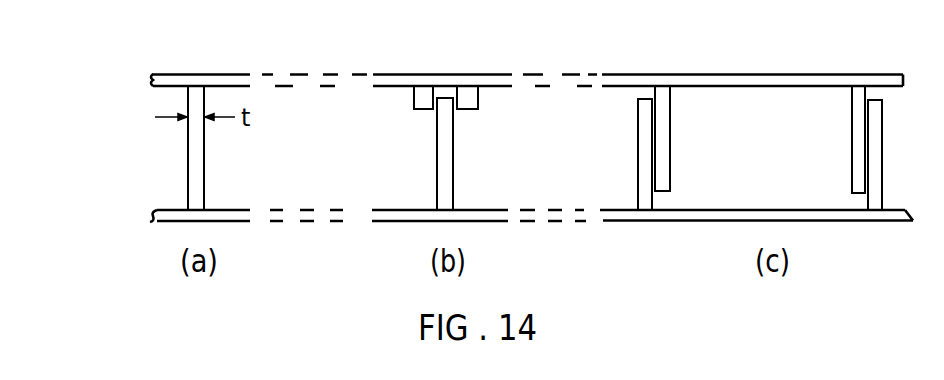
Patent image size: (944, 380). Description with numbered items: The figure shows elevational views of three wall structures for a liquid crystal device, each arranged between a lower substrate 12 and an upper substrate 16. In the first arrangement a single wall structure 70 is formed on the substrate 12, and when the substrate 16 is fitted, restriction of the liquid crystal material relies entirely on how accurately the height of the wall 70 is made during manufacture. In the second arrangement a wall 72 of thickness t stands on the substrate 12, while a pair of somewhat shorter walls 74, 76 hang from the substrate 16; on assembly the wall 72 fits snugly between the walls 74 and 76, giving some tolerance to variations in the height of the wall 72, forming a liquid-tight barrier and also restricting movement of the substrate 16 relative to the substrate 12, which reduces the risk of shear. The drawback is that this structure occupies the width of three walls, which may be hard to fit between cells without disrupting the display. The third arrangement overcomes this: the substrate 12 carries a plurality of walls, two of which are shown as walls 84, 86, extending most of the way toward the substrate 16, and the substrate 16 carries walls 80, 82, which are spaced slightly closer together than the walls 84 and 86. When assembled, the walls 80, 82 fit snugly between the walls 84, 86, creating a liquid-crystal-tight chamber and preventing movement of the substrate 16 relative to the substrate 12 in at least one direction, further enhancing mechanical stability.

The substrate 16 is at (153, 73).
The substrate 12 is at (150, 222).
The wall structure 70 is at (188, 160).
The wall 74 is at (414, 100).
The wall 76 is at (478, 109).
The wall 72 is at (437, 176).
The wall 80 is at (668, 132).
The wall 86 is at (638, 152).
The wall 82 is at (851, 147).
The wall 84 is at (882, 152).